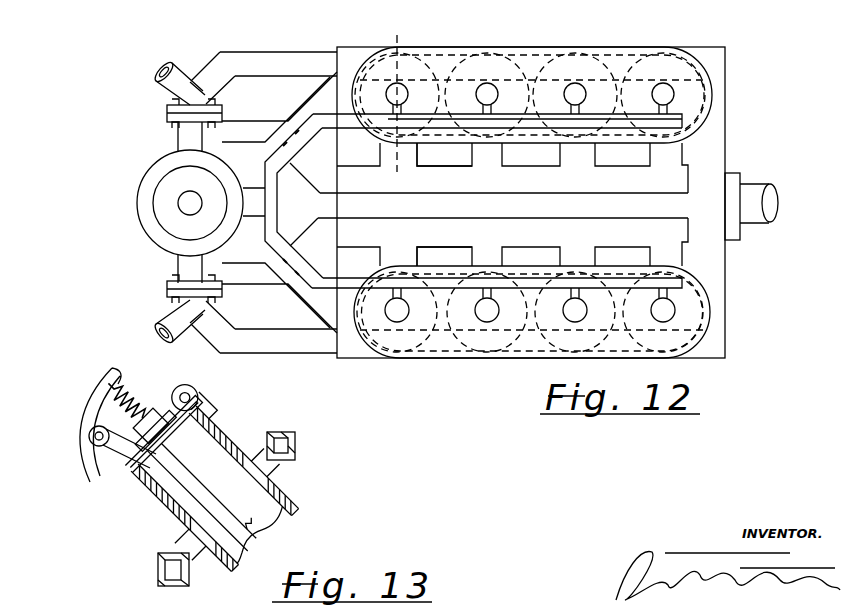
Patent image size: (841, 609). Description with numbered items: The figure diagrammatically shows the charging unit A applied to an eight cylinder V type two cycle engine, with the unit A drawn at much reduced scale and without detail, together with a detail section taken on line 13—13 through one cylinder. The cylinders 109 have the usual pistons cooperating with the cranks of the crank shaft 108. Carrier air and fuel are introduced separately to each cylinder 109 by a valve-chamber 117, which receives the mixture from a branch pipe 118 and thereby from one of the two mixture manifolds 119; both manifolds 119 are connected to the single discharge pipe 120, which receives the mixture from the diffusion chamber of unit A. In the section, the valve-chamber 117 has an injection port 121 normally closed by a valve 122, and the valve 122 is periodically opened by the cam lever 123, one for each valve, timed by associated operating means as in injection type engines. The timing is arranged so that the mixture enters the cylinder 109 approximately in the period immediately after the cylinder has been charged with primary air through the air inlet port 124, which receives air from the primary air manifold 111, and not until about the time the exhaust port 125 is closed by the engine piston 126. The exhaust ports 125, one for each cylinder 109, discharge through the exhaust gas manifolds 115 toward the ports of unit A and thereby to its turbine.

In FIG. 12, the crank shaft 108 is at (778, 220).
In FIG. 12, the cylinder 109 is at (457, 70).
In FIG. 12, the primary air manifold 111 is at (481, 204).
In FIG. 13, the primary air manifold 111 is at (296, 442).
In FIG. 12, the exhaust gas manifold 115 is at (266, 56).
In FIG. 13, the exhaust gas manifold 115 is at (165, 570).
In FIG. 12, the valve-chamber 117 is at (405, 87).
In FIG. 13, the valve-chamber 117 is at (172, 400).
In FIG. 12, the branch pipe 118 is at (393, 112).
In FIG. 12, the mixture manifold 119 is at (668, 127).
In FIG. 13, the mixture manifold 119 is at (190, 384).
In FIG. 12, the discharge pipe 120 is at (252, 207).
In FIG. 13, the injection port 121 is at (215, 410).
In FIG. 13, the valve 122 is at (178, 453).
In FIG. 13, the cam lever 123 is at (97, 478).
In FIG. 13, the air inlet port 124 is at (262, 467).
In FIG. 13, the exhaust port 125 is at (178, 532).
In FIG. 13, the engine piston 126 is at (283, 517).
In FIG. 12, the section line 13— 13 is at (398, 17).
In FIG. 12, the charging unit A is at (147, 209).